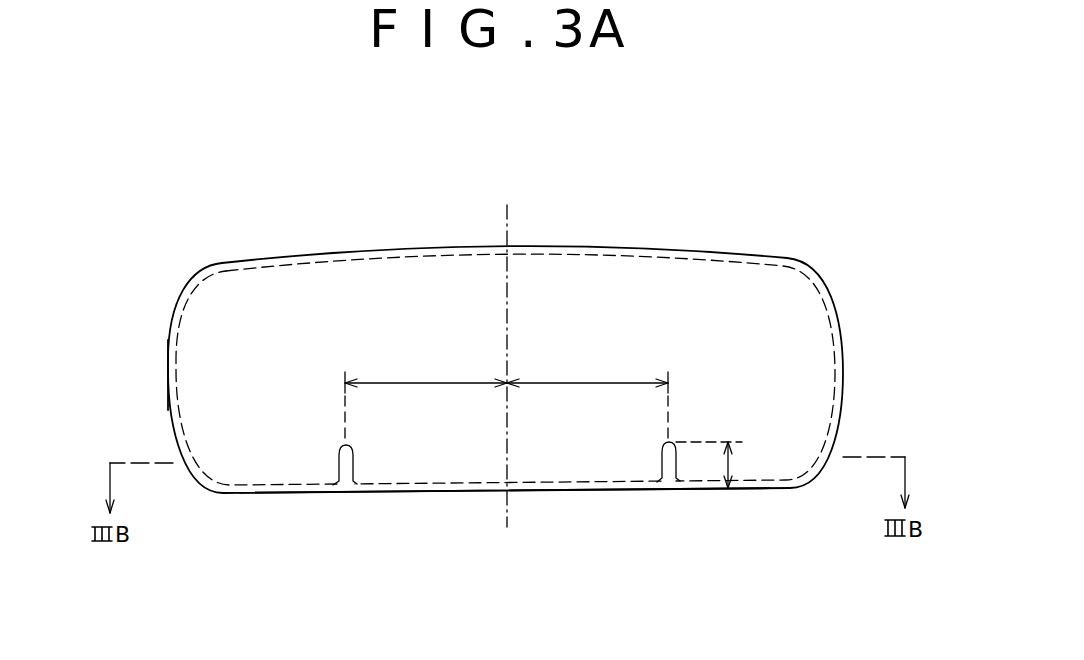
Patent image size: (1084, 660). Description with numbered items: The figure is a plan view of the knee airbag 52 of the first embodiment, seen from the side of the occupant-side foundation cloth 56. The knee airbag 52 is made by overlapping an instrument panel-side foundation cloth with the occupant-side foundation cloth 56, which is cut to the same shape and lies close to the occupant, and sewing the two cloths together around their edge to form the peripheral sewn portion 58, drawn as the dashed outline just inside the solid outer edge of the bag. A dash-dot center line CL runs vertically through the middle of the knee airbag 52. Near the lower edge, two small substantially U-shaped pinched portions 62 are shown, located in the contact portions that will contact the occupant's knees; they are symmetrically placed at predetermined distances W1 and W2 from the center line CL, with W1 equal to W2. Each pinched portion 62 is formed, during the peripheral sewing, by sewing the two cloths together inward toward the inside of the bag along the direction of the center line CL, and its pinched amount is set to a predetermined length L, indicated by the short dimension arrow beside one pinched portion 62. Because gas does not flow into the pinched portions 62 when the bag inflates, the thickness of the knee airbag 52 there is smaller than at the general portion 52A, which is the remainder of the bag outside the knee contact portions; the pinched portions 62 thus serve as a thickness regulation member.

The knee airbag 52 is at (832, 280).
The general portion 52A is at (197, 382).
The occupant-side foundation cloth 56 is at (260, 462).
The peripheral sewn portion 58 is at (834, 400).
The pinched portion 62 is at (353, 463).
The center line CL is at (510, 212).
The predetermined distance W1 is at (410, 383).
The predetermined distance W2 is at (610, 383).
The predetermined length L is at (733, 463).